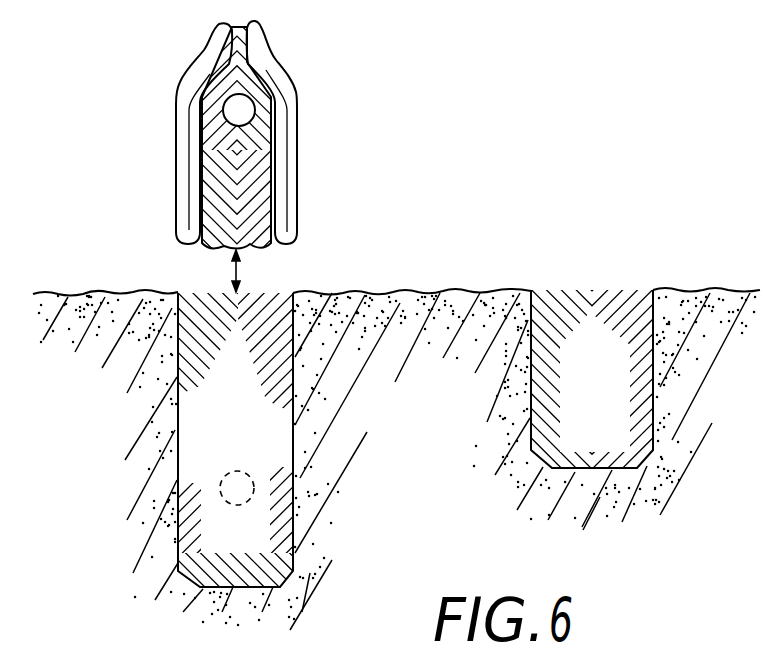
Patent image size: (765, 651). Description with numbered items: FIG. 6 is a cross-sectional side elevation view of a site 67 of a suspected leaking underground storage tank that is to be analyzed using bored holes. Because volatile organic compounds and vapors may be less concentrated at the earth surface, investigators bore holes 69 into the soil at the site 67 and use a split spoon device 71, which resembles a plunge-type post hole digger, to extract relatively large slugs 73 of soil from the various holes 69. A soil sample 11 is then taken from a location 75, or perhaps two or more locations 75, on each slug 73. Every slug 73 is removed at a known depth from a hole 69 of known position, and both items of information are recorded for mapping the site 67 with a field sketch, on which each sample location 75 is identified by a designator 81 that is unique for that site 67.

The soil sample 11 is at (274, 222).
The site 67 is at (123, 432).
The bored hole 69 is at (223, 322).
The split spoon device 71 is at (298, 163).
The slug 73 is at (218, 156).
The sample location 75 is at (242, 108).
The designator 81 is at (210, 448).